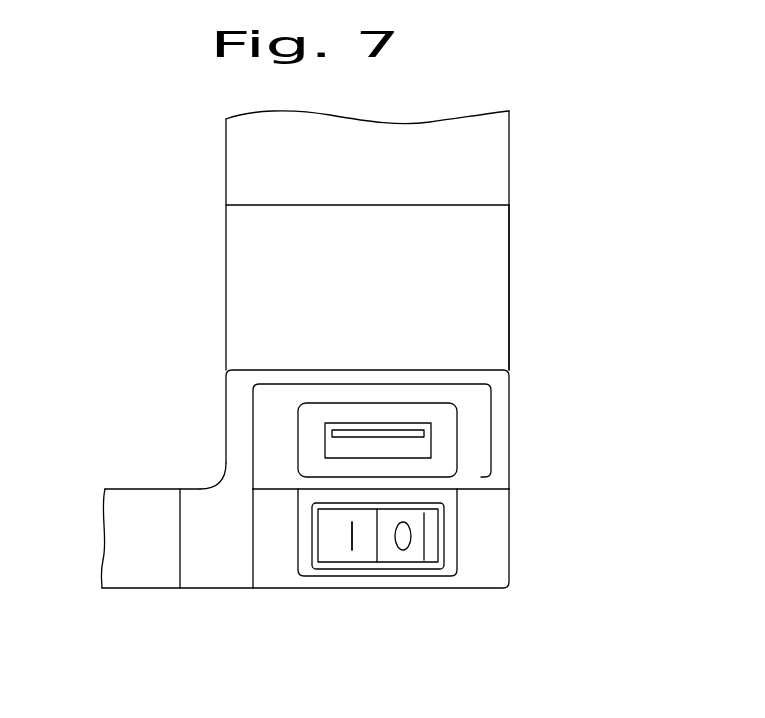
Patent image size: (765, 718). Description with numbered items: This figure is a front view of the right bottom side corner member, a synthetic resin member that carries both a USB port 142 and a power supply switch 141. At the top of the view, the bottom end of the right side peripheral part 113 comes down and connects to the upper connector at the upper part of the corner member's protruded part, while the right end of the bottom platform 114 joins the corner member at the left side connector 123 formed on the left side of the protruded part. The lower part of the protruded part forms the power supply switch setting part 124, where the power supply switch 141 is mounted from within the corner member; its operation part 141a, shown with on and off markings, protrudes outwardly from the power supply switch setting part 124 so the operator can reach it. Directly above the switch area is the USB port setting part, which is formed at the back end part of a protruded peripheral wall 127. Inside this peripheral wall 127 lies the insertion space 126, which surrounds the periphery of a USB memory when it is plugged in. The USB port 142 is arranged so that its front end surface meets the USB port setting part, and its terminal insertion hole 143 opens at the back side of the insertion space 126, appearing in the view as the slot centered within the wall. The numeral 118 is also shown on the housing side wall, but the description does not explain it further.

The right side peripheral part 113 is at (488, 163).
The housing side wall 118 is at (512, 293).
The protruded peripheral wall 127 is at (270, 462).
The power supply switch setting part 124 is at (485, 559).
The bottom platform 114 is at (137, 570).
The left side connector 123 is at (217, 565).
The insertion space 126 is at (307, 436).
The USB port 142 is at (432, 443).
The terminal insertion hole 143 is at (395, 448).
The power supply switch 141 is at (330, 567).
The operation part 141a is at (367, 550).